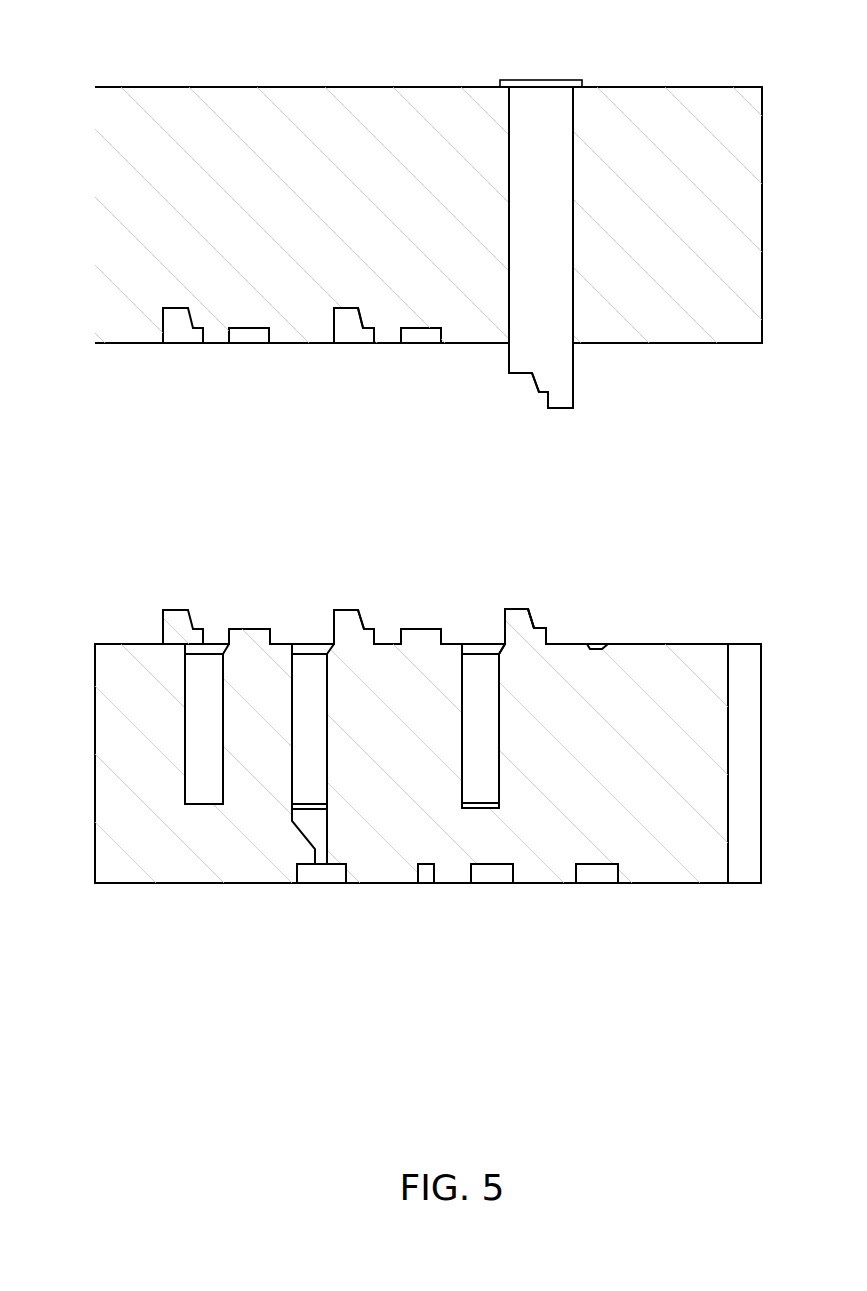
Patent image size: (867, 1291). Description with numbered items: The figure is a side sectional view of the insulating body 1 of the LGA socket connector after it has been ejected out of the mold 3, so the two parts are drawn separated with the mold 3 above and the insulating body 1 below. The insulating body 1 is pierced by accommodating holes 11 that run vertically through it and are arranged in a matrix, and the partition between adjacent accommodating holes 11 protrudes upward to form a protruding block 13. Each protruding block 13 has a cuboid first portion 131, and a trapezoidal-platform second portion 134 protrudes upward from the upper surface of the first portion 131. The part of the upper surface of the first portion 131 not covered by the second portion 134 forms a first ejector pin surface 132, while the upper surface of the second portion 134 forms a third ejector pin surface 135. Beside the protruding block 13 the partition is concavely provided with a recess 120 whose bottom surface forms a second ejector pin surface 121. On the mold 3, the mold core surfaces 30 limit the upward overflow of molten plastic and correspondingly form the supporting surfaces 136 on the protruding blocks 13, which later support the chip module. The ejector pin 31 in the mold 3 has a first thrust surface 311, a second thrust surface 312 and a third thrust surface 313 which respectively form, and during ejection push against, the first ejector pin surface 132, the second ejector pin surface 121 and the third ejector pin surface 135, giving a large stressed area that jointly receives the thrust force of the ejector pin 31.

The insulating body 1 is at (757, 642).
The accommodating hole 11 is at (305, 777).
The protruding block 13 is at (170, 618).
The recess 120 is at (568, 644).
The second ejector pin surface 121 is at (557, 644).
The first portion 131 is at (502, 631).
The first ejector pin surface 132 is at (533, 627).
The second portion 134 is at (503, 608).
The third ejector pin surface 135 is at (517, 608).
The supporting surface 136 is at (343, 608).
The mold 3 is at (745, 83).
The mold core surface 30 is at (342, 310).
The ejector pin 31 is at (553, 100).
The first thrust surface 311 is at (540, 395).
The second thrust surface 312 is at (565, 407).
The third thrust surface 313 is at (513, 372).